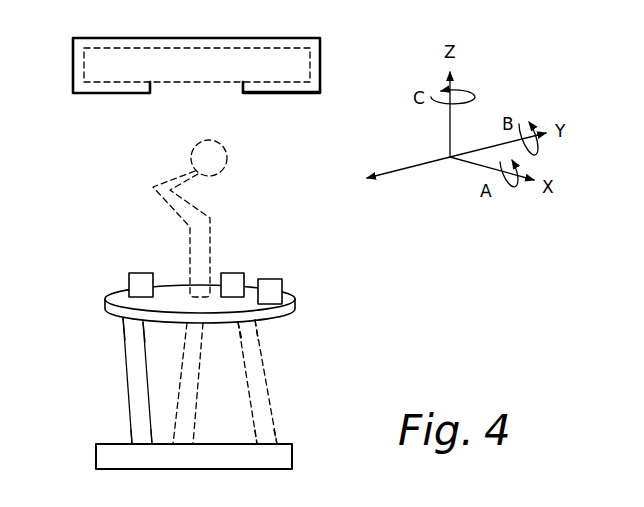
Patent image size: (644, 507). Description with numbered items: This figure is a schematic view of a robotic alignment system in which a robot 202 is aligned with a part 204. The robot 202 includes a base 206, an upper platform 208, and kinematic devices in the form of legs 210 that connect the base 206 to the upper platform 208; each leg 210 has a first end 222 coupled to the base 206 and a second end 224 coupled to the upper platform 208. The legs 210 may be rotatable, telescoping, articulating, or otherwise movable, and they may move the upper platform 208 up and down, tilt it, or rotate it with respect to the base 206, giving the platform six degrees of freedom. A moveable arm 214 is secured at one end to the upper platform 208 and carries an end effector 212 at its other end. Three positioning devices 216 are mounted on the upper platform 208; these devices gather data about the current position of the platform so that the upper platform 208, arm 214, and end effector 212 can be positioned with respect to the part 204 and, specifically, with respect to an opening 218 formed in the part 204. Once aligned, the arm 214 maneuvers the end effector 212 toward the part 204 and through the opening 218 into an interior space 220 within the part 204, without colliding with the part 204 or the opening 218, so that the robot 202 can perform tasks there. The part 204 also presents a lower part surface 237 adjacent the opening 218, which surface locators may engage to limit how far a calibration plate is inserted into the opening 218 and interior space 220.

The robot 202 is at (372, 348).
The part 204 is at (320, 63).
The base 206 is at (292, 452).
The upper platform 208 is at (104, 307).
The legs 210 is at (126, 394).
The end effector 212 is at (228, 153).
The moveable arm 214 is at (210, 218).
The positioning devices 216 is at (141, 272).
The opening 218 is at (174, 97).
The interior space 220 is at (287, 76).
The first end 222 is at (143, 443).
The second end 224 is at (124, 326).
The lower part surface 237 is at (268, 93).